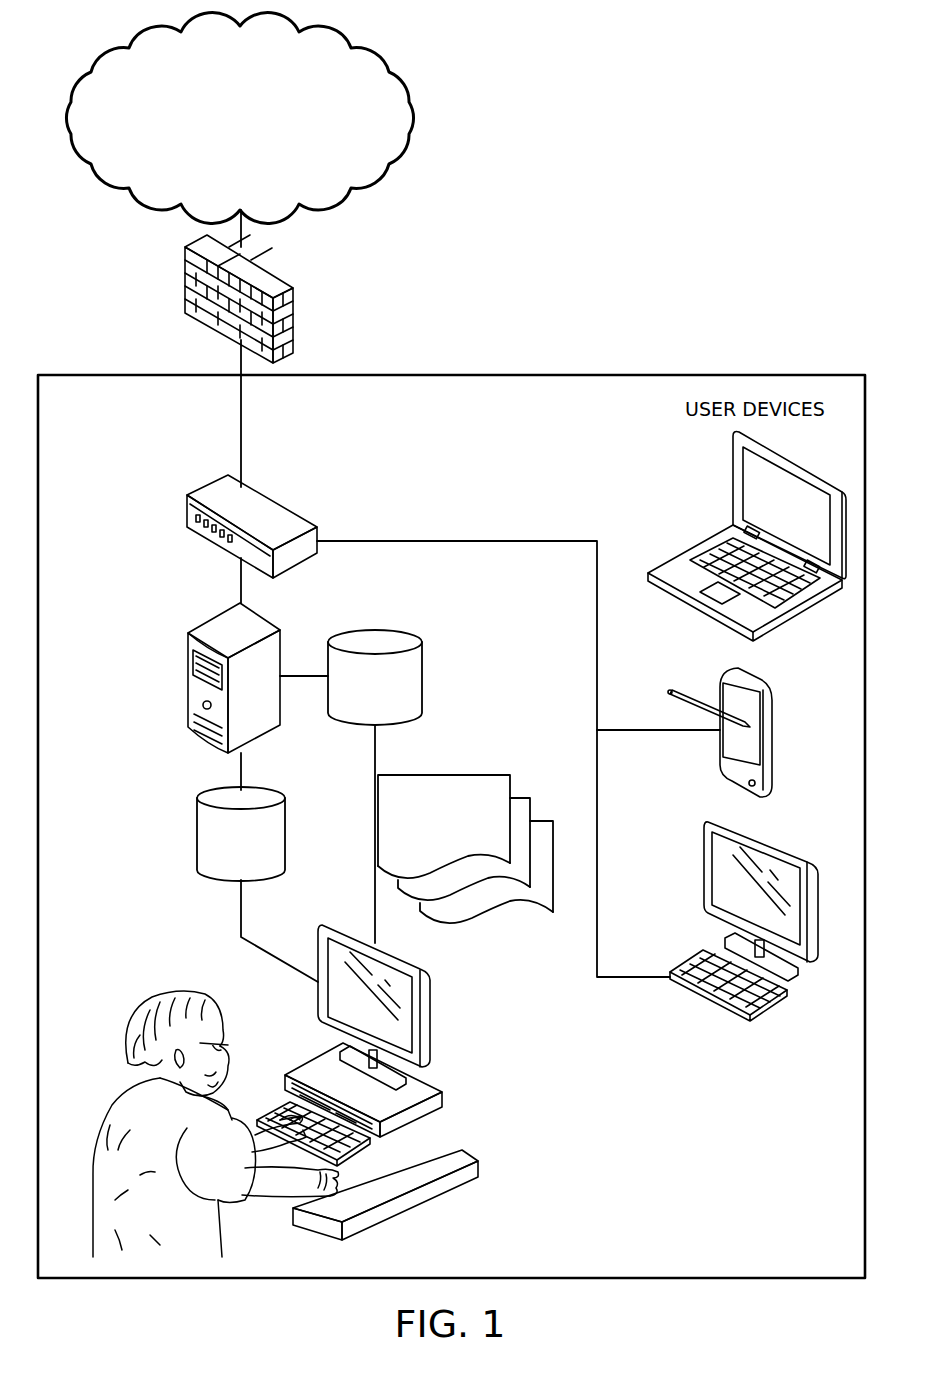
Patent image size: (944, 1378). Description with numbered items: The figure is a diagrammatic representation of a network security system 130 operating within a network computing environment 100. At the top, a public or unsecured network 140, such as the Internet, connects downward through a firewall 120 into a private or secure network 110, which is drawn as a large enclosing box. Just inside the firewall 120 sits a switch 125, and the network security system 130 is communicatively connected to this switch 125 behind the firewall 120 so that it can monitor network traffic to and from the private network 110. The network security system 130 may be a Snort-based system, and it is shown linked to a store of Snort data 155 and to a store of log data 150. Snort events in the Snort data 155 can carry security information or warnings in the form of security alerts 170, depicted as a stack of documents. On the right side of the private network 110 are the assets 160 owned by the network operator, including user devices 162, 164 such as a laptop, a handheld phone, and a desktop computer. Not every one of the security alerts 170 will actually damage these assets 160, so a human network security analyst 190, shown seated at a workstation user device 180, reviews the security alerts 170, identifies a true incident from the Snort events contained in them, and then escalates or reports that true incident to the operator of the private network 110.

The network computing environment 100 is at (659, 141).
The private or secure network 110 is at (470, 484).
The firewall 120 is at (297, 318).
The switch 125 is at (208, 486).
The network security system 130 is at (187, 666).
The public or unsecured network 140 is at (261, 178).
The log data 150 is at (196, 832).
The Snort data 155 is at (385, 631).
The assets 160 is at (732, 478).
The user device 162 is at (775, 755).
The user device 164 is at (706, 867).
The security alerts 170 is at (486, 910).
The user device 180 is at (431, 1021).
The network security analyst 190 is at (150, 1004).